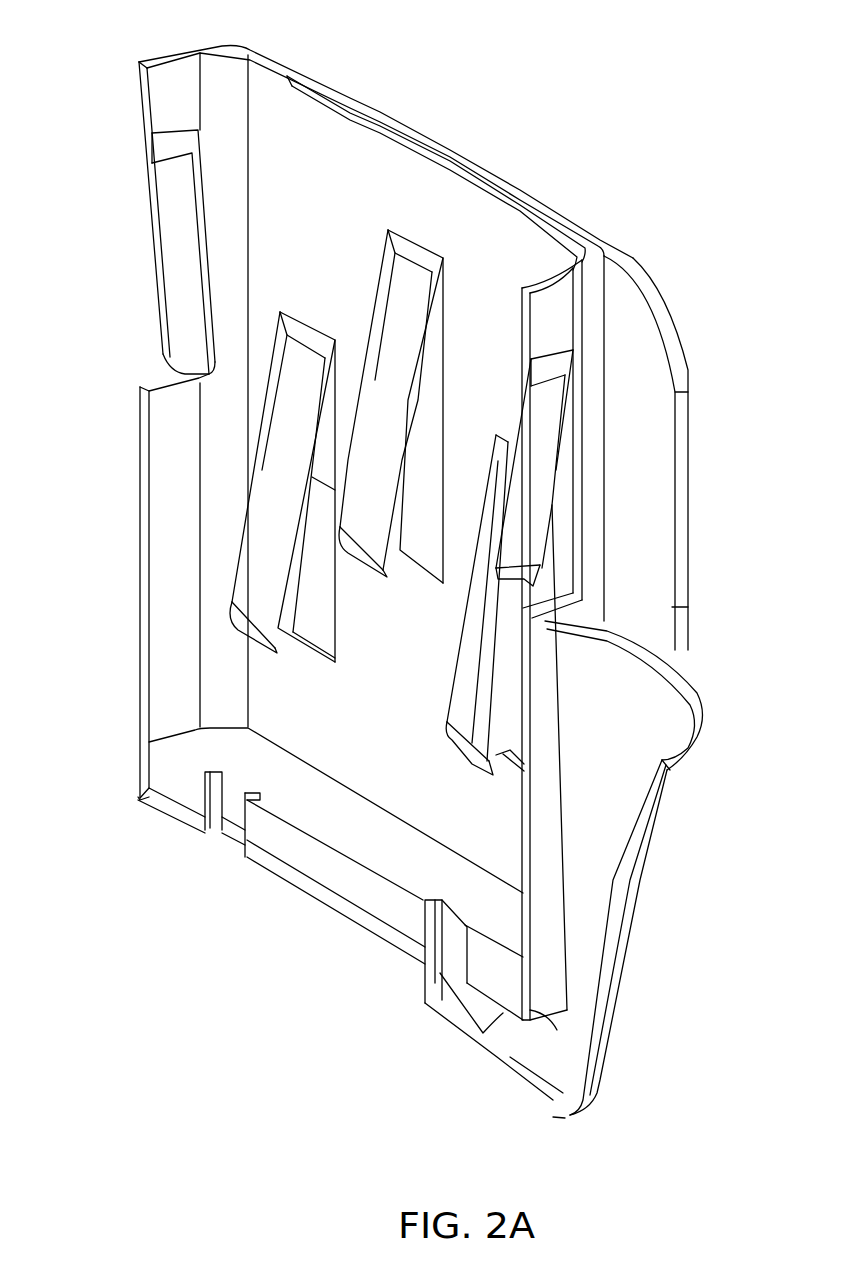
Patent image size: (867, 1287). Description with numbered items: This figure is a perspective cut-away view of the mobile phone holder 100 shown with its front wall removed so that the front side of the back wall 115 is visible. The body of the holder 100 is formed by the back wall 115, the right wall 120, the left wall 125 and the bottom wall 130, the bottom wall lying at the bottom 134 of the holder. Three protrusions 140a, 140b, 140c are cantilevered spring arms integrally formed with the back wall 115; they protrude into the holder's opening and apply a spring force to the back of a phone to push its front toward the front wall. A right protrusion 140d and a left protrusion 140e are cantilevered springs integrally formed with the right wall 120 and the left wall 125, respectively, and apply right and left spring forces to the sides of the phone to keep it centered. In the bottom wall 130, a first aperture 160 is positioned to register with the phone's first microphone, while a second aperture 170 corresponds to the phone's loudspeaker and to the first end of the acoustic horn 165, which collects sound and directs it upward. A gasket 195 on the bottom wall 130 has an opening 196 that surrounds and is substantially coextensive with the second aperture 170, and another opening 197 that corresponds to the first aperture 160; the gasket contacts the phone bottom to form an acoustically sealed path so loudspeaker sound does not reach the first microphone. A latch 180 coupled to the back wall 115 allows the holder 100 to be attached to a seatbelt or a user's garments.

The holder 100 is at (285, 1152).
The back wall 115 is at (393, 735).
The right wall 120 is at (584, 340).
The left wall 125 is at (149, 528).
The bottom wall 130 is at (147, 800).
The bottom 134 is at (139, 794).
The protrusion 140a is at (290, 550).
The protrusion 140b is at (392, 513).
The protrusion 140c is at (514, 648).
The right protrusion 140d is at (554, 503).
The left protrusion 140e is at (206, 298).
The first aperture 160 is at (215, 843).
The acoustic horn 165 is at (683, 797).
The second aperture 170 is at (440, 957).
The latch 180 is at (698, 440).
The gasket 195 is at (340, 890).
The opening 196 is at (452, 923).
The opening 197 is at (230, 800).